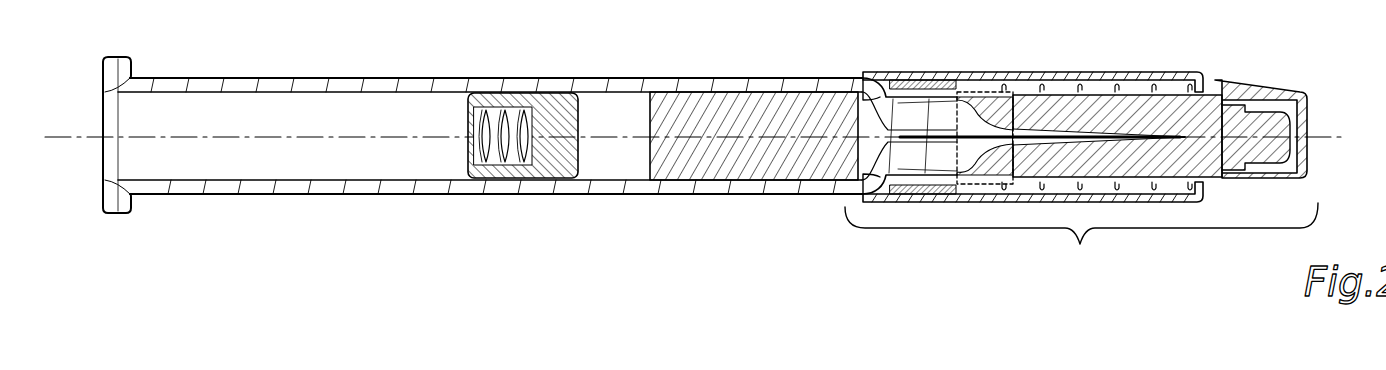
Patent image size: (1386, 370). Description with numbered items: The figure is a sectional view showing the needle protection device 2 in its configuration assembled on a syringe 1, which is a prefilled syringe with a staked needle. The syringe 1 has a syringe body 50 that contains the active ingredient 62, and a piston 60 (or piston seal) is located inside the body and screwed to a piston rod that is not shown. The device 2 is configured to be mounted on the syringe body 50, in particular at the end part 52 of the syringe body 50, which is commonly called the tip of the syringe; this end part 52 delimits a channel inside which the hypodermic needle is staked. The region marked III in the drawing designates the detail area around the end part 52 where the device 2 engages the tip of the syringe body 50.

The syringe 1 is at (108, 111).
The syringe body 50 is at (603, 86).
The piston 60 is at (565, 160).
The active ingredient 62 is at (747, 163).
The needle protection device 2 is at (1081, 173).
The end part of the syringe body 52 is at (976, 116).
The detail region III is at (965, 94).